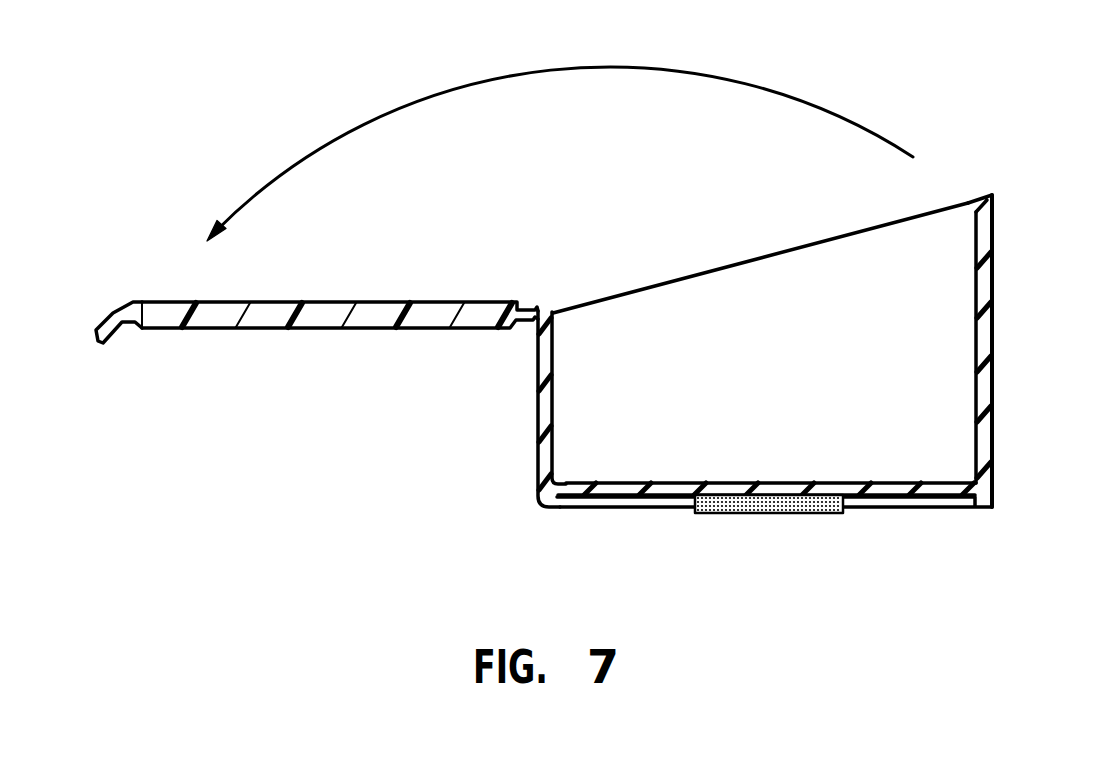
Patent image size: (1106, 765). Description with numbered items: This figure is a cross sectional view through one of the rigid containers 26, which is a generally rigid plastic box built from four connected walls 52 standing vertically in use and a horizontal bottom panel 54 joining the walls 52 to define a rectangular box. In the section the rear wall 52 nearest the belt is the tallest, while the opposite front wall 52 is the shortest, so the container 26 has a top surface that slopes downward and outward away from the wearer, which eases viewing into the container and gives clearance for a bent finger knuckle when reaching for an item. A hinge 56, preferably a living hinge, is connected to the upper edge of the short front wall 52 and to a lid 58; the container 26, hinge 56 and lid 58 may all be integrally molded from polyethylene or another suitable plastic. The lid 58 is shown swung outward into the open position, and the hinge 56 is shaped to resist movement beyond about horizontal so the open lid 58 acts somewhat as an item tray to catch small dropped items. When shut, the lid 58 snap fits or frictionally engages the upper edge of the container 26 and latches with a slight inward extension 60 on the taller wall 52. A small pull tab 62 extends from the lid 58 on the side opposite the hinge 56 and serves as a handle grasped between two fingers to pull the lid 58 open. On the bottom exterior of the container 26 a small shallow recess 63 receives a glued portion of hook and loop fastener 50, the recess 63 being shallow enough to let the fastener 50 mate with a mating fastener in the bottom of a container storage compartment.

The rigid container 26 is at (994, 303).
The hook and loop fastener 50 is at (828, 513).
The wall 52 is at (972, 369).
The bottom panel 54 is at (900, 480).
The hinge 56 is at (541, 308).
The lid 58 is at (366, 300).
The inward extension 60 is at (968, 203).
The pull tab 62 is at (101, 343).
The recess 63 is at (700, 512).